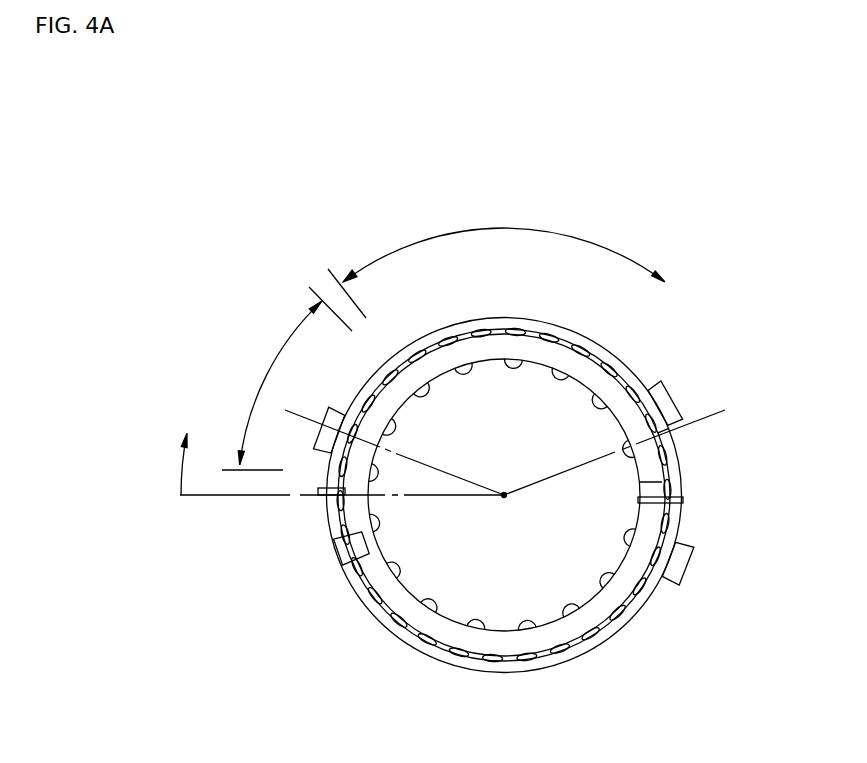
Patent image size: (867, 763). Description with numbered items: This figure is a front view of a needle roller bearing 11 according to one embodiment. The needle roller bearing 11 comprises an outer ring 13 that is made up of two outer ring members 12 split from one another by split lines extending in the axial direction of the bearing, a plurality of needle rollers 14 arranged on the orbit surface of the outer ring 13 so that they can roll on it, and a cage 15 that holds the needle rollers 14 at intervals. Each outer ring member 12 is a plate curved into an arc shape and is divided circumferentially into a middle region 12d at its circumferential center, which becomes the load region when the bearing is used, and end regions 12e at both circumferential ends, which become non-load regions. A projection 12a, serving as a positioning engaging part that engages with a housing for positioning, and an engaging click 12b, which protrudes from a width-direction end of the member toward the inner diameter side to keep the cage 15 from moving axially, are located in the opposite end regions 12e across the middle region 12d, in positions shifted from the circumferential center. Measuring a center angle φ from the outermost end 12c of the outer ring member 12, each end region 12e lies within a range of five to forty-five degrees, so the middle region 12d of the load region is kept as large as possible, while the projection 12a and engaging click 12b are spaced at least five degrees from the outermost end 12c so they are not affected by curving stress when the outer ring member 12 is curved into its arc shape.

The needle roller bearing 11 is at (246, 252).
The outer ring member 12 is at (677, 478).
The projection 12a is at (688, 560).
The engaging click 12b is at (346, 548).
The outermost end 12c is at (326, 498).
The middle region 12d is at (496, 260).
The end region 12e is at (287, 378).
The outer ring 13 is at (737, 462).
The needle roller 14 is at (466, 660).
The cage 15 is at (553, 637).